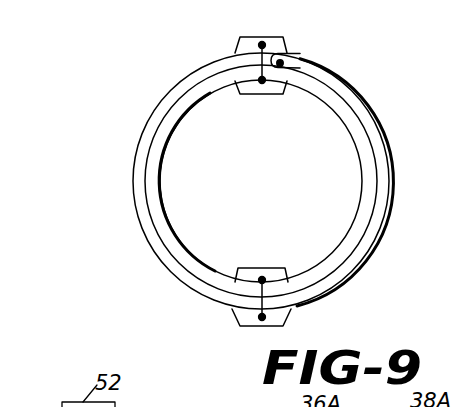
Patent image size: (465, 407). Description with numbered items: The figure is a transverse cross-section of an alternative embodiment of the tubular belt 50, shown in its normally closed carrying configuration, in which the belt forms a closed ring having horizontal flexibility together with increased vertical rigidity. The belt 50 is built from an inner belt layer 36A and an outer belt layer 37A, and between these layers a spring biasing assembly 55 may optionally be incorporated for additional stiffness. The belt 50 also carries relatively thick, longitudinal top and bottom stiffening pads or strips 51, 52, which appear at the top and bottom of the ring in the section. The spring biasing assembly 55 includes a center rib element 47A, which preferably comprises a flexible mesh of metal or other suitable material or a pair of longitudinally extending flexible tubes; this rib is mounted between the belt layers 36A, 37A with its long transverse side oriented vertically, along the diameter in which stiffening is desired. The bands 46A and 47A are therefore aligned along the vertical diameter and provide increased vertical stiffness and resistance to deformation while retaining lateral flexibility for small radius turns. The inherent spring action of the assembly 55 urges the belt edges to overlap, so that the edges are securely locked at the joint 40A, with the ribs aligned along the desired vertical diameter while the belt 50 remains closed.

The tubular belt 50 is at (370, 82).
The top stiffening pad 51 is at (275, 37).
The bottom stiffening pad 52 is at (267, 331).
The band 46A is at (258, 57).
The center rib element 47A is at (260, 312).
The joint 40A is at (297, 51).
The inner belt layer 36A is at (353, 234).
The outer belt layer 37A is at (358, 262).
The spring biasing assembly 55 is at (153, 238).